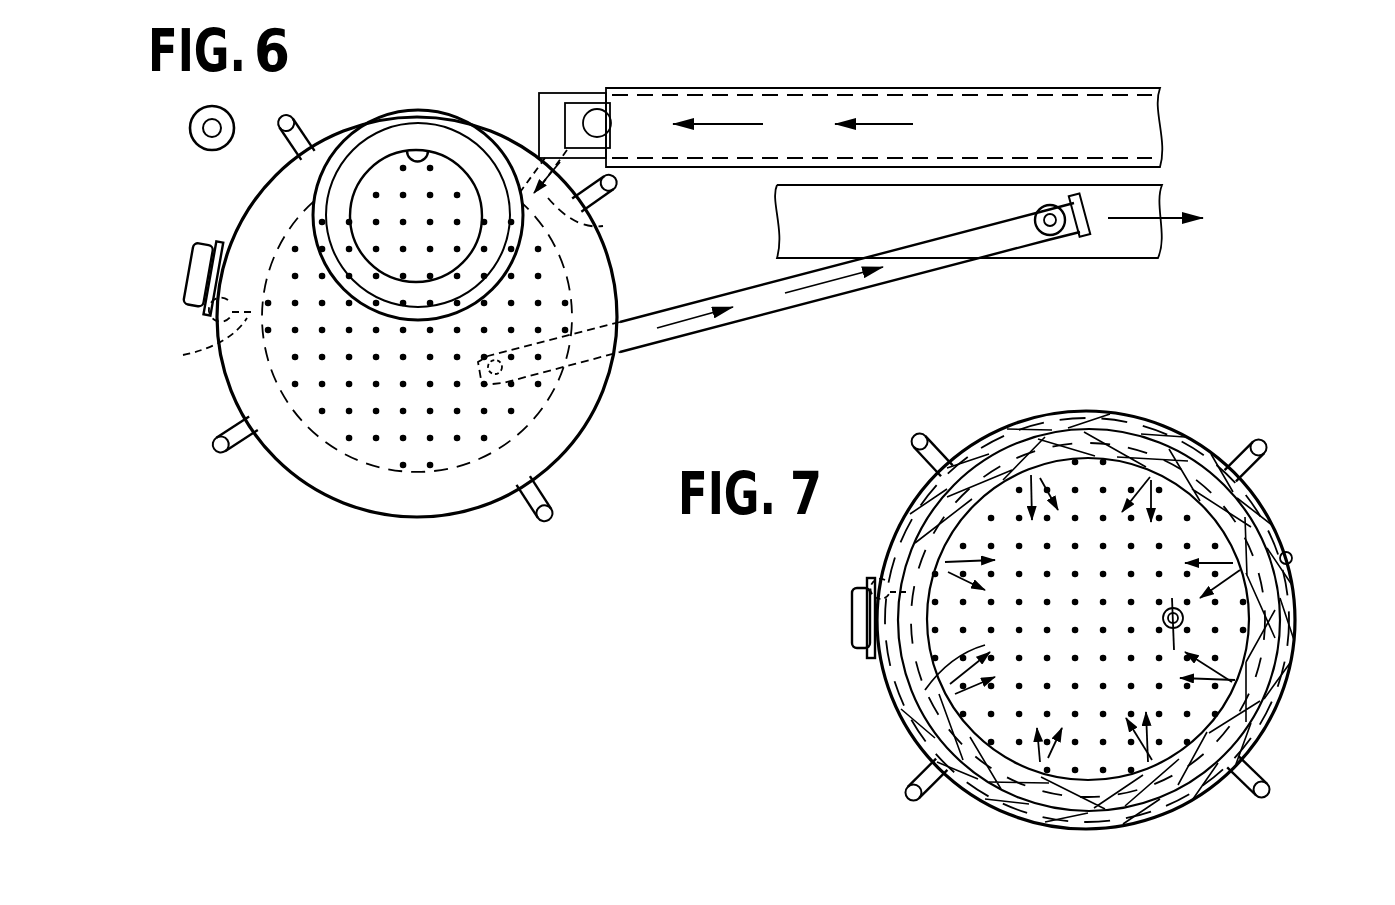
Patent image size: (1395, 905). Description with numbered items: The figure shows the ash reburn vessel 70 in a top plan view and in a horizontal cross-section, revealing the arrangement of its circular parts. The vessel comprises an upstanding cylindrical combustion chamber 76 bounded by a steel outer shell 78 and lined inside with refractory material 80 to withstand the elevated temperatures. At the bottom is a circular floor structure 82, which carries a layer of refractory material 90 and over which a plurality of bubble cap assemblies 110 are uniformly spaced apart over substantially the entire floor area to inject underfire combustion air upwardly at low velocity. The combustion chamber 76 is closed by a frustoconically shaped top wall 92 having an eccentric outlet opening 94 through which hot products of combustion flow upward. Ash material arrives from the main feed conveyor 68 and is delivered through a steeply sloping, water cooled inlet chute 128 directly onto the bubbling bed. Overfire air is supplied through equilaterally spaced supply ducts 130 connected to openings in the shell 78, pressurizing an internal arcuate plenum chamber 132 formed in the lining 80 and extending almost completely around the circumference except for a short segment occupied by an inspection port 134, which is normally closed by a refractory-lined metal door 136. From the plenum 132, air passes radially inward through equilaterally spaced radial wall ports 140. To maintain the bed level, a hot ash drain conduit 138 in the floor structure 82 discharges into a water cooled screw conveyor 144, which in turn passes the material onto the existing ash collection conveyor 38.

In FIG. 6, the ash collection conveyor 38 is at (1058, 250).
In FIG. 6, the main feed conveyor 68 is at (864, 107).
In FIG. 6, the ash reburn vessel 70 is at (419, 562).
In FIG. 7, the ash reburn vessel 70 is at (1099, 854).
In FIG. 6, the cylindrical combustion chamber 76 is at (296, 382).
In FIG. 7, the cylindrical combustion chamber 76 is at (1203, 538).
In FIG. 6, the steel outer shell 78 is at (568, 448).
In FIG. 7, the steel outer shell 78 is at (1291, 557).
In FIG. 6, the refractory material 80 is at (308, 452).
In FIG. 7, the refractory material 80 is at (950, 665).
In FIG. 6, the circular floor structure 82 is at (604, 392).
In FIG. 7, the circular floor structure 82 is at (1075, 623).
In FIG. 7, the layer of refractory material 90 is at (1290, 613).
In FIG. 6, the frustoconically shaped top wall 92 is at (430, 352).
In FIG. 6, the eccentric outlet opening 94 is at (426, 160).
In FIG. 6, the bubble cap assemblies 110 is at (297, 272).
In FIG. 7, the bubble cap assemblies 110 is at (1103, 490).
In FIG. 6, the inlet chute 128 is at (604, 226).
In FIG. 6, the supply ducts 130 is at (277, 113).
In FIG. 7, the supply ducts 130 is at (920, 434).
In FIG. 7, the internal arcuate plenum chamber 132 is at (902, 522).
In FIG. 6, the inspection port 134 is at (198, 330).
In FIG. 7, the inspection port 134 is at (883, 577).
In FIG. 6, the metal door 136 is at (188, 272).
In FIG. 7, the metal door 136 is at (853, 620).
In FIG. 6, the hot ash drain conduit 138 is at (560, 330).
In FIG. 7, the hot ash drain conduit 138 is at (1162, 624).
In FIG. 7, the radial wall ports 140 is at (950, 530).
In FIG. 6, the water cooled screw conveyor 144 is at (800, 297).